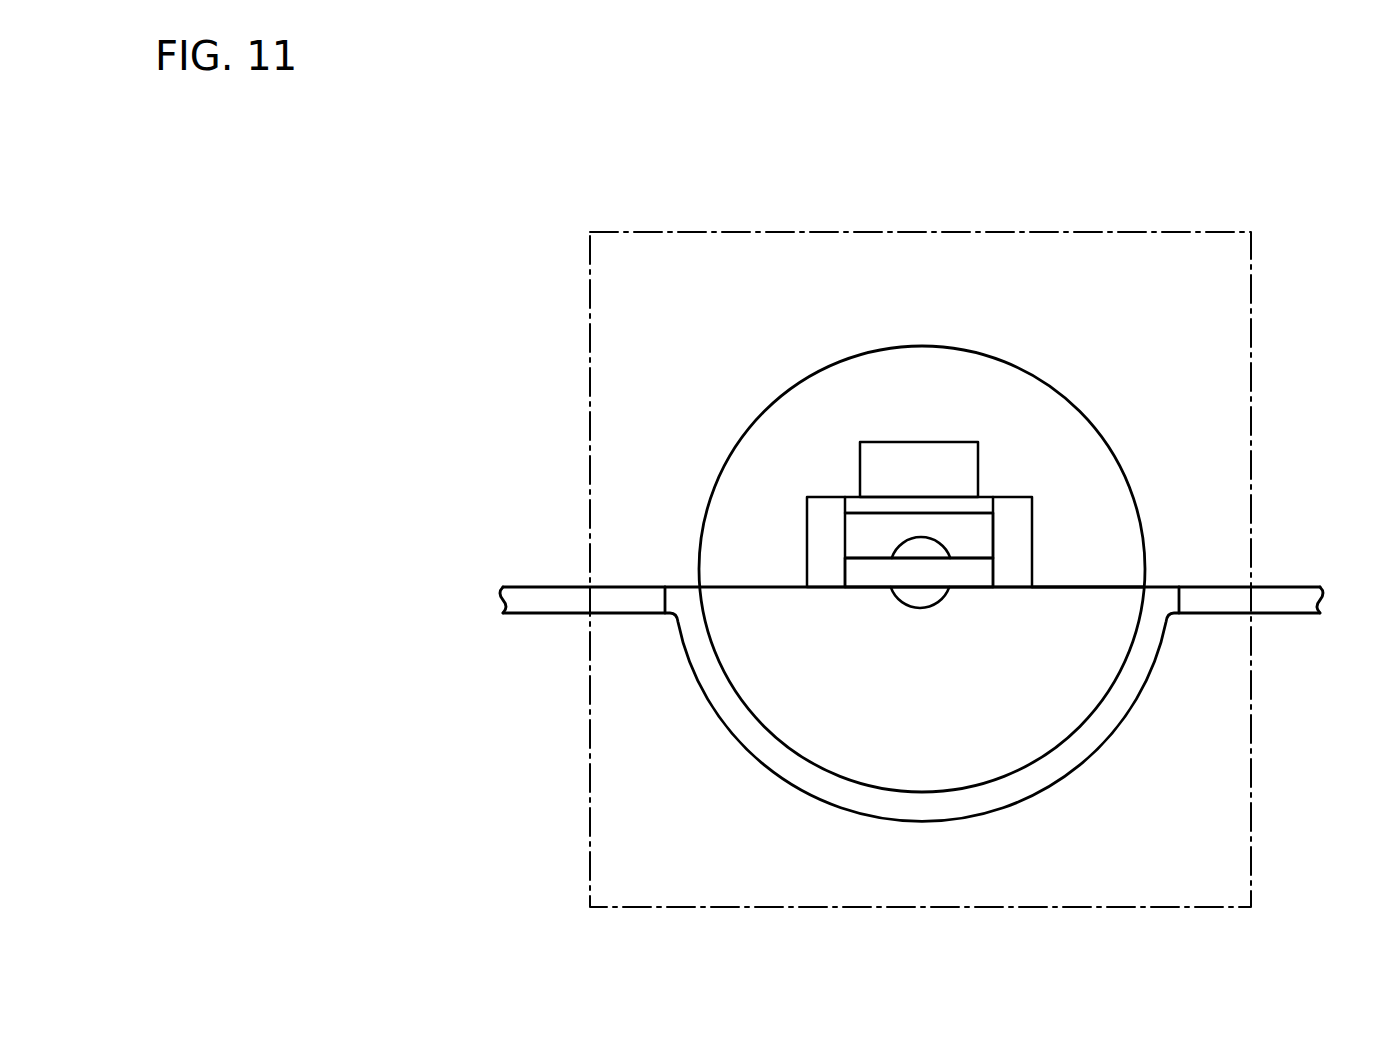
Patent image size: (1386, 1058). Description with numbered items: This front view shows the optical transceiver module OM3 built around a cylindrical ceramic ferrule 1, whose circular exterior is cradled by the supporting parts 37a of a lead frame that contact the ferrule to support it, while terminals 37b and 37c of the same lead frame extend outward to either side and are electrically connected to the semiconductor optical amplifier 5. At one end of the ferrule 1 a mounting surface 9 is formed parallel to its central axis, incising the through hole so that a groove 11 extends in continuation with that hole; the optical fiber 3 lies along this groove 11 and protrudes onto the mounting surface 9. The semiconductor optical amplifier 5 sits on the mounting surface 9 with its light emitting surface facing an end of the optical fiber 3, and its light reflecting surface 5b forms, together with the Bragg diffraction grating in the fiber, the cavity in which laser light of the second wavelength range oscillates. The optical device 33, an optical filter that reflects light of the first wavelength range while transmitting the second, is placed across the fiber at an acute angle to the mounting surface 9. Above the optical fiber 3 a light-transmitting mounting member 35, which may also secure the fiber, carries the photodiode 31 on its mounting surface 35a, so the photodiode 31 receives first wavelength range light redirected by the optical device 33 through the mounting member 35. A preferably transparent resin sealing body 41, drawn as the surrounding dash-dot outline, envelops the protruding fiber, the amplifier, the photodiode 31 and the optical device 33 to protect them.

The optical transceiver module OM3 is at (1263, 172).
The resin sealing body 41 is at (1252, 290).
The ferrule 1 is at (1101, 441).
The optical fiber 3 is at (893, 550).
The semiconductor optical amplifier 5 is at (857, 553).
The light reflecting surface 5b is at (972, 577).
The mounting surface 9 is at (1093, 587).
The groove 11 is at (910, 598).
The photodiode 31 is at (920, 442).
The optical device 33 is at (973, 532).
The mounting member 35 is at (805, 510).
The mounting surface 35a is at (1012, 495).
The supporting parts 37a is at (943, 805).
The terminal 37b is at (1285, 597).
The terminal 37c is at (548, 600).